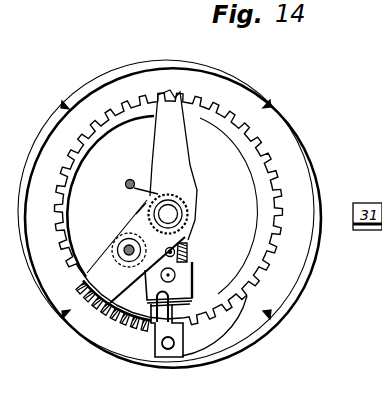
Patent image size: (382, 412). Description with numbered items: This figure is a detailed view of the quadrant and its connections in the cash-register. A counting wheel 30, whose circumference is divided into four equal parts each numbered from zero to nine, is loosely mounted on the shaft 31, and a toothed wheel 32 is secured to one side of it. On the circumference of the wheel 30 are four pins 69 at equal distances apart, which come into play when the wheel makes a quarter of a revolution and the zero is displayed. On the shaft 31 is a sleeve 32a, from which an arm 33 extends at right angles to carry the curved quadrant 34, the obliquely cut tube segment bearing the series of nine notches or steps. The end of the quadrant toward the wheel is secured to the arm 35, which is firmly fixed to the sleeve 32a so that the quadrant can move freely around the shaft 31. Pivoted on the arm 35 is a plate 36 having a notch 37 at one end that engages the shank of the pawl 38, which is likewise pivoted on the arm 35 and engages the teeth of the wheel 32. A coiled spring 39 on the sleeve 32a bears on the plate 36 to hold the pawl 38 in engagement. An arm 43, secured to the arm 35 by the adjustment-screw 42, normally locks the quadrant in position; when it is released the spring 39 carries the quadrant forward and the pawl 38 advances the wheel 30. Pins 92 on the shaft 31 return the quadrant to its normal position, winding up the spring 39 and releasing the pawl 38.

The wheel 30 is at (305, 284).
The shaft 31 is at (168, 214).
The toothed wheel 32 is at (258, 158).
The sleeve 32a is at (137, 212).
The arm 33 is at (139, 251).
The quadrant 34 is at (113, 309).
The arm 35 is at (160, 358).
The plate 36 is at (161, 278).
The notch 37 is at (180, 292).
The pawl 38 is at (218, 345).
The coiled spring 39 is at (130, 179).
The adjustment-screw 42 is at (116, 243).
The arm 43 is at (173, 165).
The pins 69 is at (63, 103).
The pins 92 is at (190, 247).